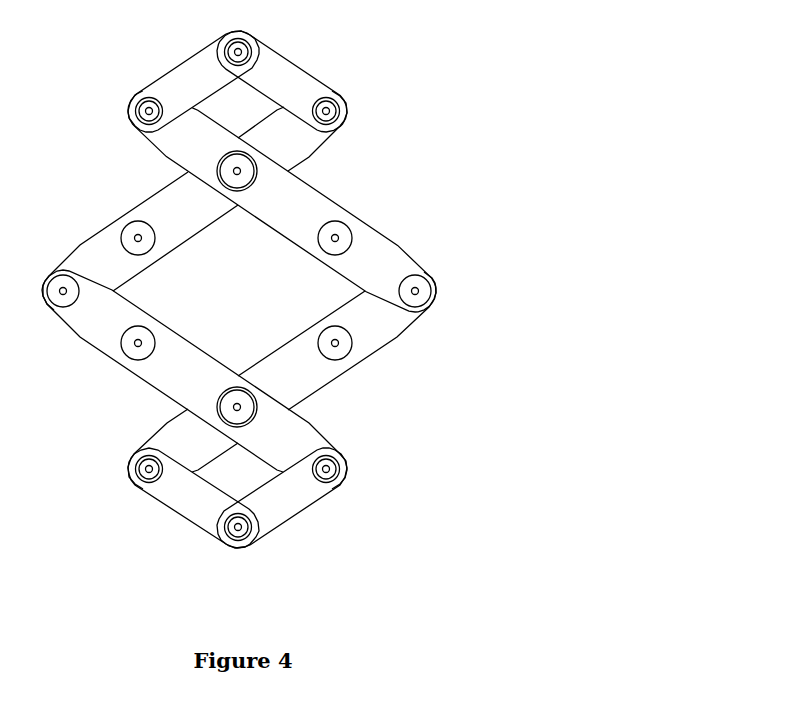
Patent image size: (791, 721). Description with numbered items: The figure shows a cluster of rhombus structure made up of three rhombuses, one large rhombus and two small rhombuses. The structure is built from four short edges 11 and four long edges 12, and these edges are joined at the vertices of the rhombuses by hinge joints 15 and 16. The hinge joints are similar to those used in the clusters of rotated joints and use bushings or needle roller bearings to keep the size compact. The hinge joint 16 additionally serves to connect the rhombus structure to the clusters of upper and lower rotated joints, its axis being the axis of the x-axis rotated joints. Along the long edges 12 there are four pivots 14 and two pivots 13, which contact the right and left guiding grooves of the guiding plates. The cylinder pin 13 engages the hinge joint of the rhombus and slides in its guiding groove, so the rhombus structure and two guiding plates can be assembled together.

The short edge 11 is at (282, 75).
The long edge 12 is at (364, 320).
The pivot 13 is at (63, 295).
The pivot 14 is at (333, 341).
The hinge joint 15 is at (324, 110).
The hinge joint 16 is at (241, 51).